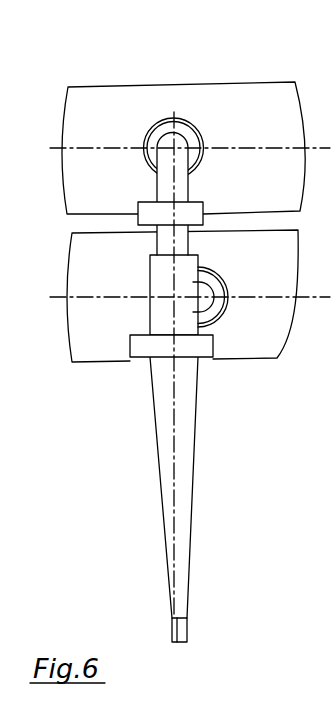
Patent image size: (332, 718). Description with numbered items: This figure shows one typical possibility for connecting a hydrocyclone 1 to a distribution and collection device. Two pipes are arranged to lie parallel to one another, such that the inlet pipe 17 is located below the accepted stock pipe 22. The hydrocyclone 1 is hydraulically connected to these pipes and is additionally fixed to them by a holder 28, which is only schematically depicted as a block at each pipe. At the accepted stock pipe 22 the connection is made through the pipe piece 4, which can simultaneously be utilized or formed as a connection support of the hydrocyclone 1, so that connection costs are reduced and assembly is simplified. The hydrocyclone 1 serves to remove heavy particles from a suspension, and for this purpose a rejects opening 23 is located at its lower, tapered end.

The hydrocyclone 1 is at (153, 440).
The pipe piece 4 is at (152, 123).
The inlet pipe 17 is at (268, 348).
The accepted stock pipe 22 is at (277, 128).
The rejects opening 23 is at (176, 630).
The holder 28 is at (145, 212).